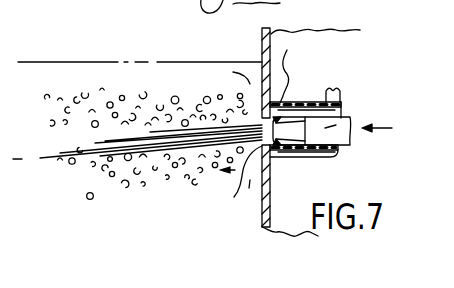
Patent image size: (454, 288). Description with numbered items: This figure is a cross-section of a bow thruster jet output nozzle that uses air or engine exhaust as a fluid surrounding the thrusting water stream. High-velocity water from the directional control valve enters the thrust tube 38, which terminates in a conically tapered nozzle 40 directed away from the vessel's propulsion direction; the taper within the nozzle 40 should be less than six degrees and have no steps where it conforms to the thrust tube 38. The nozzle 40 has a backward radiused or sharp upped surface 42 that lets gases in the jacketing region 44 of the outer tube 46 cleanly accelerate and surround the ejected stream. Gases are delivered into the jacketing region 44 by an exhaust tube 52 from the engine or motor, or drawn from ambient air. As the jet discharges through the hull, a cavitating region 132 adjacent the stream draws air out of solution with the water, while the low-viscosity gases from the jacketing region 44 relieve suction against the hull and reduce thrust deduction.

The cavitating region 132 is at (255, 118).
The jacketing region 44 is at (332, 75).
The exhaust tube 52 is at (342, 92).
The thrust tube 38 is at (350, 124).
The tube 46 is at (305, 150).
The tapered nozzle 40 is at (280, 150).
The upped surface 42 is at (234, 197).